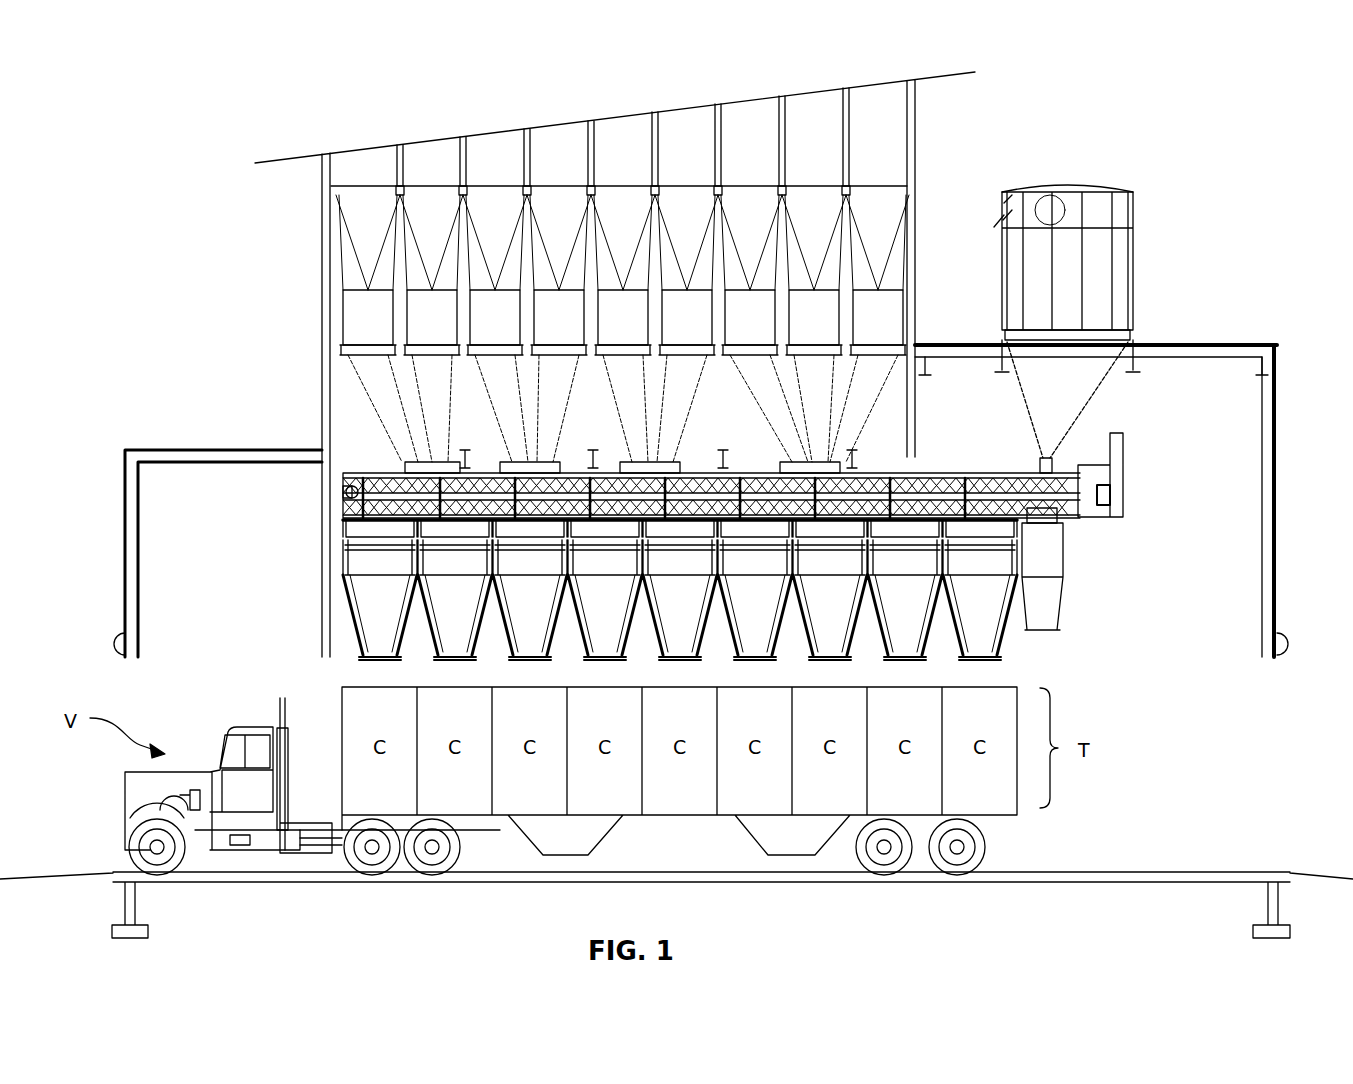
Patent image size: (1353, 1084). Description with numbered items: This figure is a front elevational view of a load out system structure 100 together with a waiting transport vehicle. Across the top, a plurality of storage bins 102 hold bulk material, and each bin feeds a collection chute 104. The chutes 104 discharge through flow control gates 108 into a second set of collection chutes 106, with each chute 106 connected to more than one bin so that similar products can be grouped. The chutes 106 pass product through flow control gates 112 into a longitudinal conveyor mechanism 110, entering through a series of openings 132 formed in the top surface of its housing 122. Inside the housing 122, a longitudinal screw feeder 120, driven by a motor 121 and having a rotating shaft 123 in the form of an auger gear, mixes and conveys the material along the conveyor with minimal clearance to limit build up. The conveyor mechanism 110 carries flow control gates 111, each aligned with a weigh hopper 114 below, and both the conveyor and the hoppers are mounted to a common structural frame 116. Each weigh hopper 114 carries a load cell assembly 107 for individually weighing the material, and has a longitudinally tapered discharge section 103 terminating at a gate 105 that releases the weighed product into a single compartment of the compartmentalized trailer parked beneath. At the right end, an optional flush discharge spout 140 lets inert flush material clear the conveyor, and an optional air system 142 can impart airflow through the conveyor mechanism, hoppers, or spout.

The load out system structure 100 is at (1142, 130).
The storage bins 102 is at (620, 189).
The first plurality of collection chutes 104 is at (623, 317).
The second plurality of collection chutes 106 is at (623, 408).
The flow control gates 108 is at (375, 350).
The longitudinal conveyor mechanism 110 is at (1095, 537).
The flow control gates 111 is at (360, 480).
The flow control gates 112 is at (438, 462).
The weigh hoppers 114 is at (680, 613).
The structural frame 116 is at (343, 528).
The longitudinal screw feeder 120 is at (345, 493).
The motor 121 is at (1112, 495).
The housing 122 is at (1048, 470).
The rotating shaft 123 is at (1100, 513).
The openings 132 is at (852, 452).
The flush discharge spout 140 is at (1075, 581).
The air system 142 is at (1100, 284).
The longitudinally tapered discharge section 103 is at (355, 608).
The gate 105 is at (340, 656).
The load cell assembly 107 is at (343, 553).